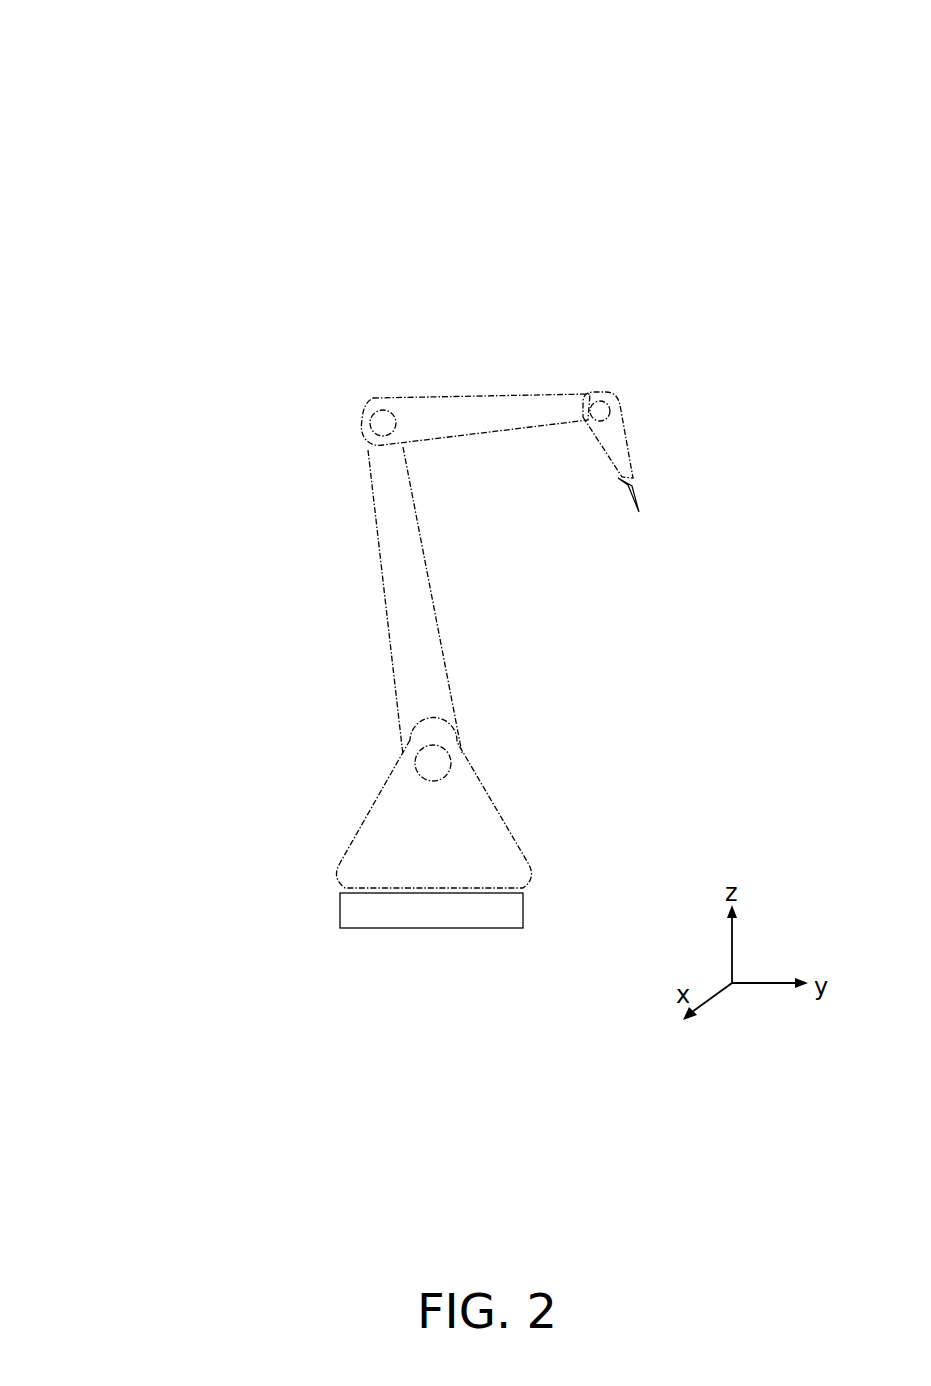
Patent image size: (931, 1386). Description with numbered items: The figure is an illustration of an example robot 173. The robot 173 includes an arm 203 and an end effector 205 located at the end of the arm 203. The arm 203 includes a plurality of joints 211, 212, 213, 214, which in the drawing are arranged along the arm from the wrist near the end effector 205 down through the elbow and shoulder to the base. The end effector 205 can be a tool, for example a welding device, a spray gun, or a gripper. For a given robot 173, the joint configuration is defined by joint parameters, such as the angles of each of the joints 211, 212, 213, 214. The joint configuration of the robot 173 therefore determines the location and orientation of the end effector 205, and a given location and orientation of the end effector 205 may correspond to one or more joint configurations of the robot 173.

The robot 173 is at (100, 44).
The arm 203 is at (486, 396).
The end effector 205 is at (633, 492).
The joint 211 is at (600, 411).
The joint 212 is at (372, 417).
The joint 213 is at (432, 762).
The joint 214 is at (340, 907).